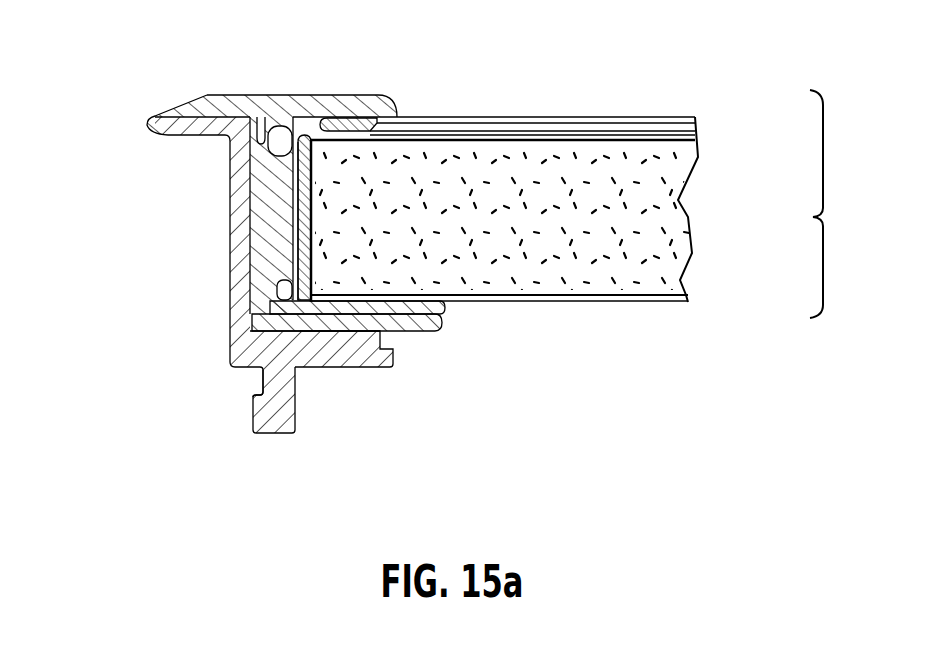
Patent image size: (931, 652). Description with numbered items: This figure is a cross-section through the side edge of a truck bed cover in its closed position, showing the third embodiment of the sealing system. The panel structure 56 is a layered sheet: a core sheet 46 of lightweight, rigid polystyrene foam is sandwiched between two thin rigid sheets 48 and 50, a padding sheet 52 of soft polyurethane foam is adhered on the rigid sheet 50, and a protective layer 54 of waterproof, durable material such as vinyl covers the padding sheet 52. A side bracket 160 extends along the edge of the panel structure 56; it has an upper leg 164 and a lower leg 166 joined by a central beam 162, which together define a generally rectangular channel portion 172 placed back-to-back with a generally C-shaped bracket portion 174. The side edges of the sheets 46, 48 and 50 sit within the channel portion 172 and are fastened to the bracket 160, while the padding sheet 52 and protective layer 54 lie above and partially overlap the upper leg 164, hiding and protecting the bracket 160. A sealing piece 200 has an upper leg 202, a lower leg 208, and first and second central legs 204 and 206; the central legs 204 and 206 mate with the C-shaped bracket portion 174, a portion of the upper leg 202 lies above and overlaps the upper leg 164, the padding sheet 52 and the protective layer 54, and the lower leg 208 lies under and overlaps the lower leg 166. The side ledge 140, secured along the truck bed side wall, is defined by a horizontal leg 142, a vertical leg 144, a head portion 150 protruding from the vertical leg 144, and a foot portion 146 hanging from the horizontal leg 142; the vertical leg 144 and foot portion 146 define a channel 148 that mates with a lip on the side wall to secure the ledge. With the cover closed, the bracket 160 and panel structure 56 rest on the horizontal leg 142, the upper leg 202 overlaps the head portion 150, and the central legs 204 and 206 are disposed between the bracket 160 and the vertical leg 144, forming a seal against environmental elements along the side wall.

The sheet 46 is at (653, 223).
The thin sheet 48 is at (688, 296).
The thin sheet 50 is at (693, 137).
The padding sheet 52 is at (693, 128).
The protective layer 54 is at (693, 118).
The panel structure 56 is at (842, 204).
The side ledge 140 is at (240, 337).
The horizontal leg 142 is at (317, 347).
The vertical leg 144 is at (240, 174).
The foot portion 146 is at (270, 410).
The channel 148 is at (252, 378).
The head portion 150 is at (187, 118).
The side bracket 160 is at (413, 333).
The central beam 162 is at (265, 277).
The upper leg 164 is at (343, 128).
The lower leg 166 is at (363, 313).
The channel portion 172 is at (322, 228).
The C-shaped bracket portion 174 is at (287, 238).
The sealing piece 200 is at (362, 100).
The upper leg 202 is at (306, 104).
The first central leg 204 is at (259, 125).
The second central leg 206 is at (277, 210).
The lower leg 208 is at (425, 320).